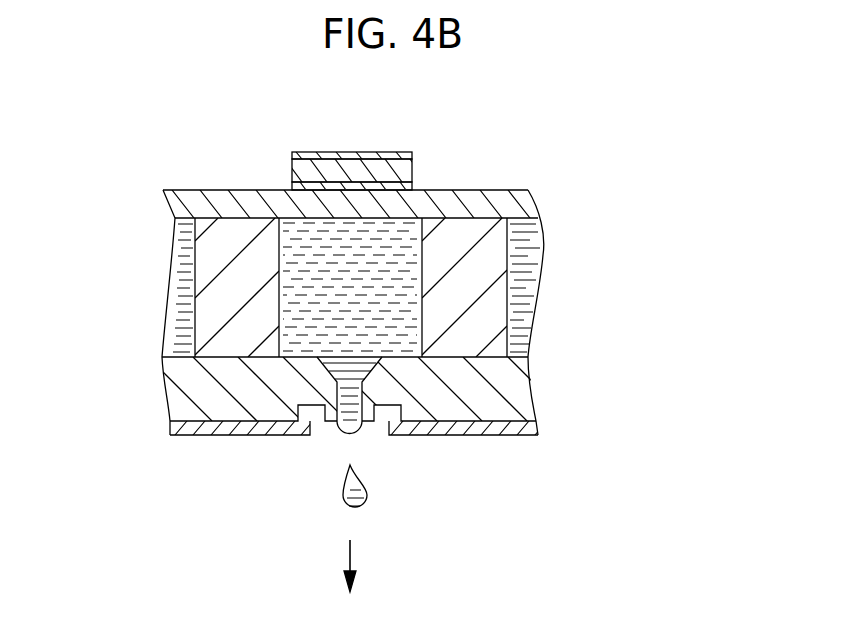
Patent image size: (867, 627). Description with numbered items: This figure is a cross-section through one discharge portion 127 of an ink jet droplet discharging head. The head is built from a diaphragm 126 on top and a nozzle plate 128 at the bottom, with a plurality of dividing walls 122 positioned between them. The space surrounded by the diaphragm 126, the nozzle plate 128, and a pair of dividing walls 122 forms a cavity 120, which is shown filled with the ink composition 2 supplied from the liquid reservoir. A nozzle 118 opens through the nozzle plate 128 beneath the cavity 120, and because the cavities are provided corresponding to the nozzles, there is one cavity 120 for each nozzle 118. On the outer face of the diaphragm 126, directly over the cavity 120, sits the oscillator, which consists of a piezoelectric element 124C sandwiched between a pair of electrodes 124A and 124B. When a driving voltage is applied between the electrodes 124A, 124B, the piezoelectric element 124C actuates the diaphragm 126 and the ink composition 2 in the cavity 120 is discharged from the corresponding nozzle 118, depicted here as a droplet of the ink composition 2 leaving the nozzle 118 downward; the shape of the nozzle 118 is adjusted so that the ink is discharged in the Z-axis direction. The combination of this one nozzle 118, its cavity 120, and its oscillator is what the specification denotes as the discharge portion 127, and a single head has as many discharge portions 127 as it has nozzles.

The discharge portion 127 is at (578, 132).
The diaphragm 126 is at (195, 208).
The electrode 124A is at (342, 152).
The electrode 124B is at (305, 188).
The piezoelectric element 124C is at (400, 172).
The dividing wall 122 is at (210, 317).
The cavity 120 is at (405, 253).
The nozzle plate 128 is at (502, 397).
The nozzle 118 is at (343, 410).
The ink composition 2 is at (370, 494).